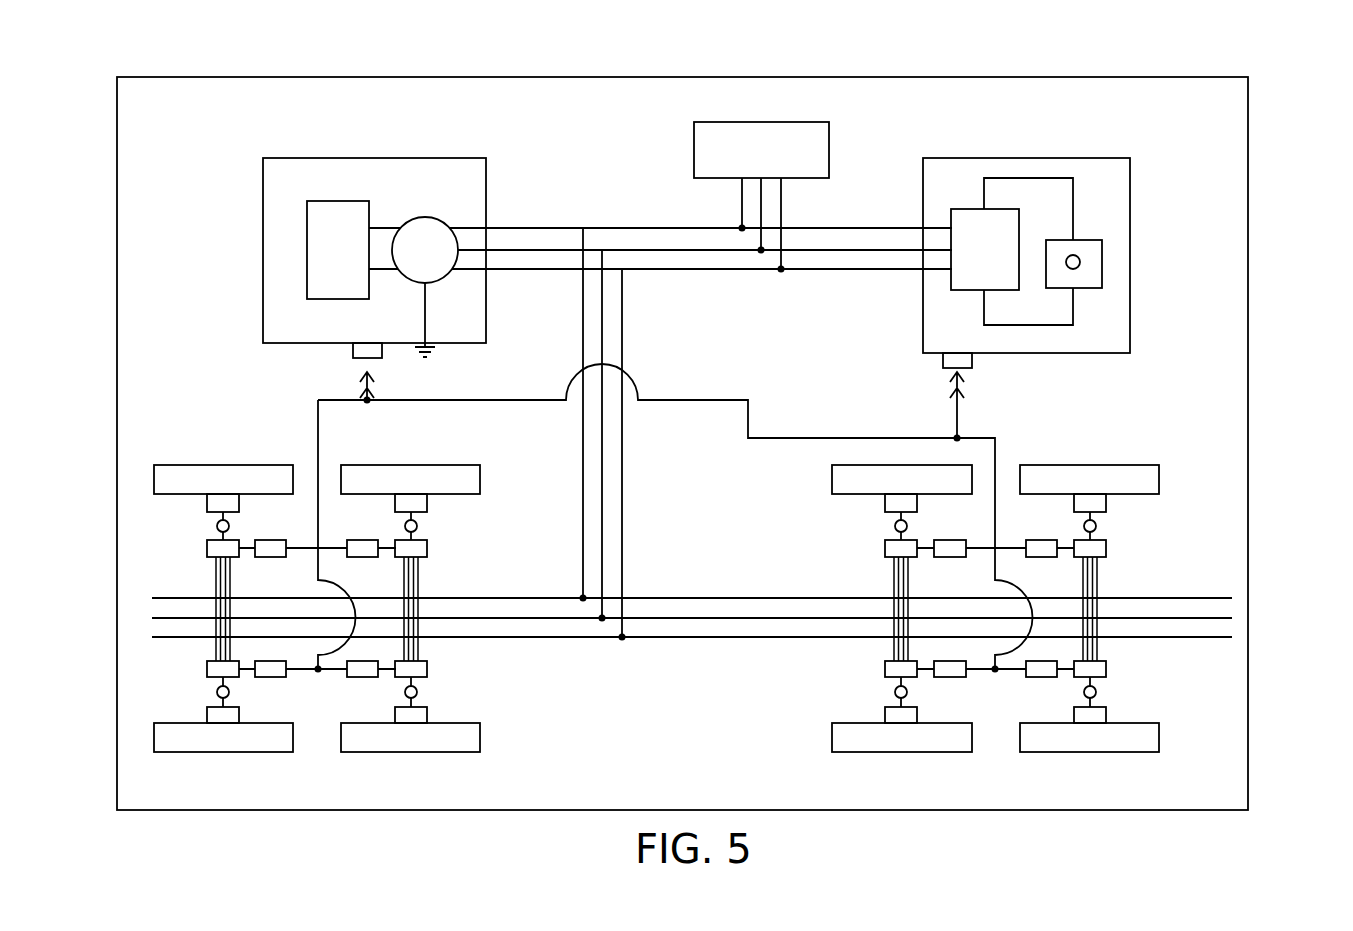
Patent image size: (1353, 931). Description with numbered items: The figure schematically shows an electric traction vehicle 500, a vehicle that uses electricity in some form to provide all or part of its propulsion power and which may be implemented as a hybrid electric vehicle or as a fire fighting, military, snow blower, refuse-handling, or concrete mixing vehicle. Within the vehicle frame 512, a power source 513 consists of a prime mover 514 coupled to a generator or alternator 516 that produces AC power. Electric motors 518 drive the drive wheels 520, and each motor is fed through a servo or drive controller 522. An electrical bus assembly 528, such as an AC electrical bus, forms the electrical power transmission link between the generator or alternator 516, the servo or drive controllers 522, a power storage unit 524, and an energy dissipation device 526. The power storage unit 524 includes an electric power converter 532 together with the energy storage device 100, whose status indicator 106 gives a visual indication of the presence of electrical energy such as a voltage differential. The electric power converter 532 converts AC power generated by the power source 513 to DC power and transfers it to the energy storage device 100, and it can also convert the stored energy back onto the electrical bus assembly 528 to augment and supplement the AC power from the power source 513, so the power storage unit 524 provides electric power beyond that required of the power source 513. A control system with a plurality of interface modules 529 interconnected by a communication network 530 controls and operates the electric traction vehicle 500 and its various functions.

The electric traction vehicle 500 is at (1284, 116).
The vehicle frame 512 is at (116, 288).
The power source 513 is at (372, 158).
The prime mover 514 is at (307, 250).
The generator or alternator 516 is at (428, 217).
The electric motors 518 is at (229, 529).
The drive wheels 520 is at (222, 465).
The servo or drive controllers 522 is at (207, 548).
The power storage unit 524 is at (1052, 158).
The energy dissipation device 526 is at (763, 122).
The electrical bus assembly 528 is at (650, 586).
The interface modules 529 is at (353, 352).
The communication network 530 is at (338, 420).
The electric power converter 532 is at (966, 209).
The energy storage device 100 is at (1090, 240).
The status indicator 106 is at (1080, 262).